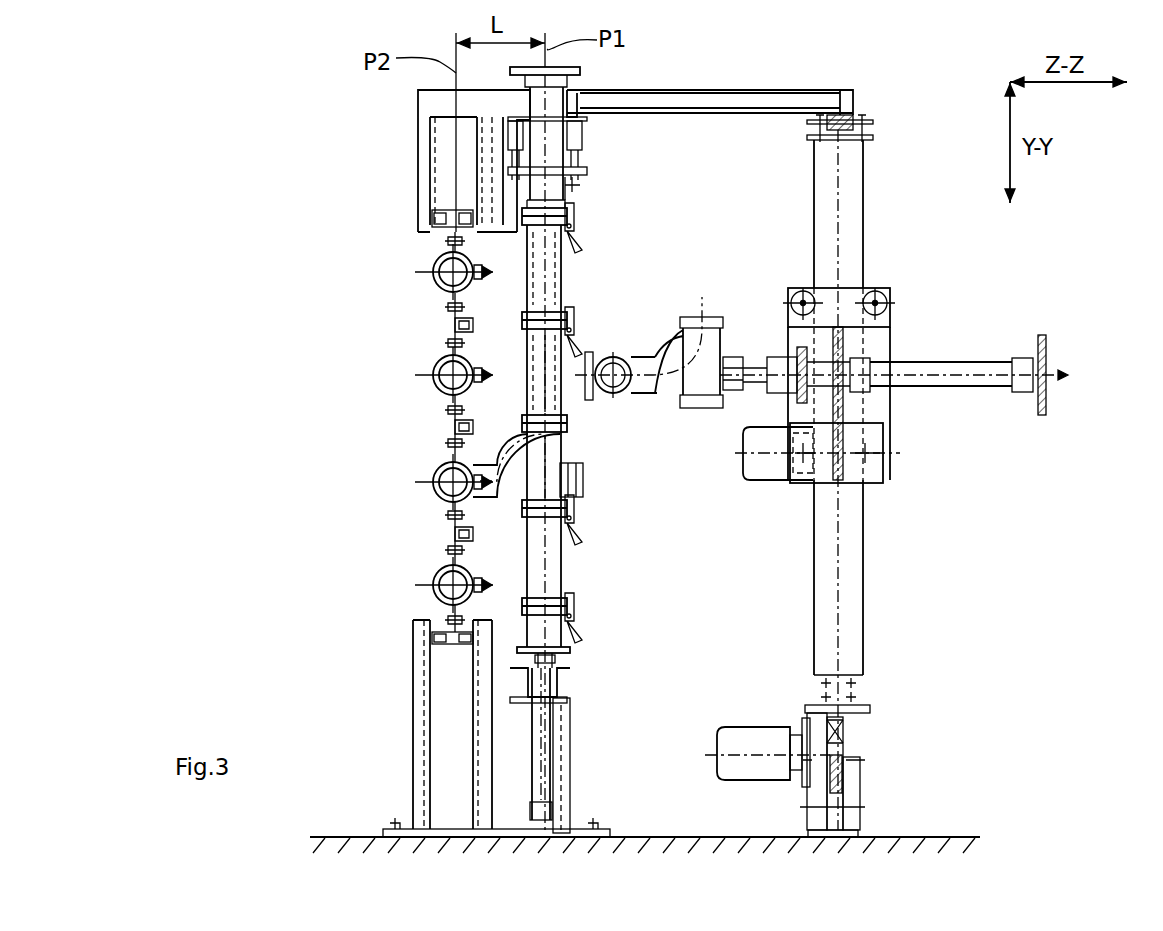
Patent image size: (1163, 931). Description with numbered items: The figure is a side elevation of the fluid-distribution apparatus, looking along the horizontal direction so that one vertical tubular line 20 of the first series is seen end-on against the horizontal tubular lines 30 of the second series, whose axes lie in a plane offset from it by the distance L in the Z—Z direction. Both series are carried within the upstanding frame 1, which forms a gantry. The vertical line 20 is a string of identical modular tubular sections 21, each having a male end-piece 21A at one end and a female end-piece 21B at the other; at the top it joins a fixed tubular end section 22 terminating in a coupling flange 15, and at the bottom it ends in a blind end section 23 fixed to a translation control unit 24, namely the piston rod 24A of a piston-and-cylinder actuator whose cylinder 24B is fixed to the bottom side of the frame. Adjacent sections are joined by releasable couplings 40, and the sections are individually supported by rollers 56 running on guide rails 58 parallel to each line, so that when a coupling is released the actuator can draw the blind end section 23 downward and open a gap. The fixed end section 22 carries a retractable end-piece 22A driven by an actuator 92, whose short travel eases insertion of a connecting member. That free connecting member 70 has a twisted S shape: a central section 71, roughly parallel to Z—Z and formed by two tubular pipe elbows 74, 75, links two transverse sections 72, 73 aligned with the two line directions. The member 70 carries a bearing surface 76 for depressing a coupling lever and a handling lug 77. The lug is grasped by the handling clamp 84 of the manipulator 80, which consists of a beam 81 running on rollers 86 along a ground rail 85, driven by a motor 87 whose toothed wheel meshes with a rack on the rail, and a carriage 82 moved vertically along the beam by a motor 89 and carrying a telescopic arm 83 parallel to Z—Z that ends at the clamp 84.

The upstanding frame 1 is at (412, 136).
The coupling flange 15 is at (578, 70).
The vertical tubular line 20 is at (583, 470).
The modular tubular section 21 is at (527, 368).
The male end-piece 21A is at (565, 290).
The female end-piece 21B is at (565, 350).
The fixed tubular end section 22 is at (560, 156).
The retractable end-piece 22A is at (576, 182).
The blind end section 23 is at (568, 642).
The translation control unit 24 is at (572, 682).
The piston rod 24A is at (533, 682).
The cylinder 24B is at (572, 745).
The horizontal tubular line 30 is at (425, 290).
The coupling 40 is at (578, 218).
The roller 56 is at (446, 307).
The guide rail 58 is at (457, 325).
The free connecting member 70 is at (674, 347).
The central section 71 is at (674, 322).
The transverse section 72 is at (570, 405).
The transverse section 73 is at (730, 318).
The tubular pipe elbow 74 is at (708, 410).
The tubular pipe elbow 75 is at (642, 397).
The bearing surface 76 is at (560, 352).
The handling lug 77 is at (581, 524).
The manipulator 80 is at (886, 476).
The beam 81 is at (865, 222).
The carriage 82 is at (890, 342).
The telescopic arm 83 is at (942, 390).
The handling clamp 84 is at (745, 432).
The rail 85 is at (848, 758).
The roller 86 is at (845, 722).
The motor 87 is at (757, 725).
The motor 89 is at (770, 484).
The actuator 92 is at (580, 144).